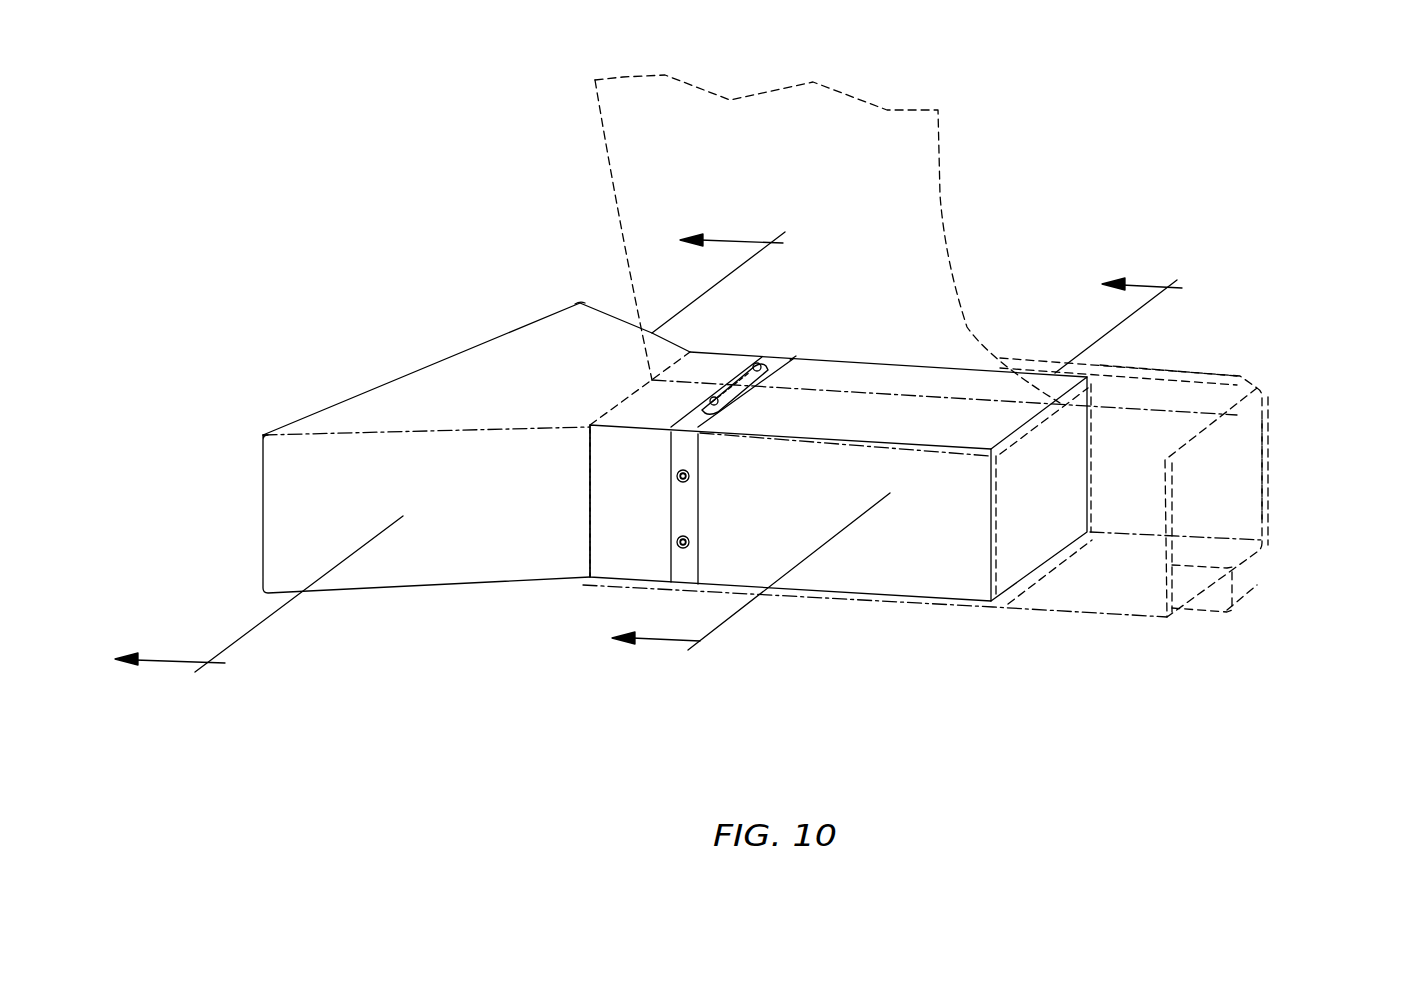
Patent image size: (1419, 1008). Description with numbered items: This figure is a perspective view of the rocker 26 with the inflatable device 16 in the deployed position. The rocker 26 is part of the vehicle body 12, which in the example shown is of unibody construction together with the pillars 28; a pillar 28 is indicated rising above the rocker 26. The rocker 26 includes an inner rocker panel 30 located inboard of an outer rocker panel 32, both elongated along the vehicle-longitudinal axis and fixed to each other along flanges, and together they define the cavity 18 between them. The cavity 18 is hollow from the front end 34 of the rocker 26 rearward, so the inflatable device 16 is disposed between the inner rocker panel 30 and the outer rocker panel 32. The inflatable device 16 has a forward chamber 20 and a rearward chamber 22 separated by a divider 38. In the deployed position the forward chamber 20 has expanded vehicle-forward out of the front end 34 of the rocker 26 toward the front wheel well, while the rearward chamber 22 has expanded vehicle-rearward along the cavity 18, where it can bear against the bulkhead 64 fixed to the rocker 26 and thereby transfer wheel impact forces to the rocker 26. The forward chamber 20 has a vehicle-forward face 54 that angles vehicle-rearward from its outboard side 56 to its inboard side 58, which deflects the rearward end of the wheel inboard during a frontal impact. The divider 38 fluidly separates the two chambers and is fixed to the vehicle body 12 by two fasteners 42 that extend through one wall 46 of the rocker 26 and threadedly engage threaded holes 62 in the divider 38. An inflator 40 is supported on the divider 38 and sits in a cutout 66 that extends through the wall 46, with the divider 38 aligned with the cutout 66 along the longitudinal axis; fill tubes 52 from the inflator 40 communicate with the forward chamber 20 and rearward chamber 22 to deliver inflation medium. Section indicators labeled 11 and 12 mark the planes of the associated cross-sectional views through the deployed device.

The section line 11- 11 is at (469, 458).
The vehicle body 12 is at (1087, 700).
The inflatable device 16 is at (556, 585).
The cavity 18 is at (1222, 462).
The forward chamber 20 is at (479, 369).
The rearward chamber 22 is at (928, 573).
The rocker 26 is at (1268, 334).
The pillar 28 is at (940, 193).
The inner rocker panel 30 is at (1207, 363).
The outer rocker panel 32 is at (1132, 617).
The front end 34 is at (583, 588).
The divider 38 is at (767, 358).
The inflator 40 is at (748, 395).
The fastener 42 is at (673, 482).
The wall 46 is at (1290, 428).
The fill tube 52 is at (767, 357).
The vehicle-forward face 54 is at (363, 390).
The outboard side 56 is at (305, 529).
The inboard side 58 is at (612, 312).
The threaded hole 62 is at (700, 476).
The bulkhead 64 is at (1040, 575).
The cutout 66 is at (788, 355).